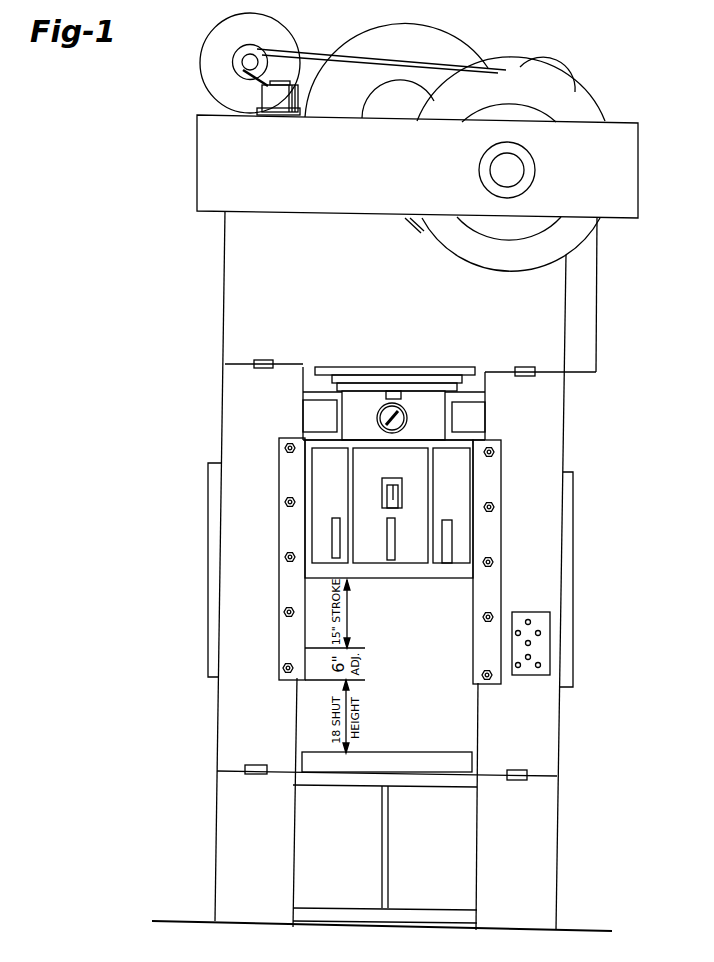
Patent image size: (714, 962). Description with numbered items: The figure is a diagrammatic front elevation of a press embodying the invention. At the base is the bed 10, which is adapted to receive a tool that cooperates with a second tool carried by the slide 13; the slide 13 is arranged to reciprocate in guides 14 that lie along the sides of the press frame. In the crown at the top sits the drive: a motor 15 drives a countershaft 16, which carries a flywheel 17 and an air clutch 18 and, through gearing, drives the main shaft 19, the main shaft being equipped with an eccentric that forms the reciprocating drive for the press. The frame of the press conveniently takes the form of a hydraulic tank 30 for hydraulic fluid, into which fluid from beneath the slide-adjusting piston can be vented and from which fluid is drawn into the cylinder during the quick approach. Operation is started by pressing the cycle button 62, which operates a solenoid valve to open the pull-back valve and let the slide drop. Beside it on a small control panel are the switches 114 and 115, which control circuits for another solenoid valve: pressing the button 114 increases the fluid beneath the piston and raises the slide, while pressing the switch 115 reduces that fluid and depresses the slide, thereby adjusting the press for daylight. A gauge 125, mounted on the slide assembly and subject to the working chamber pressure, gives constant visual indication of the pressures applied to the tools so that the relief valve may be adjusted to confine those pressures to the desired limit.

The bed 10 is at (382, 804).
The slide 13 is at (465, 535).
The guides 14 is at (548, 727).
The motor 15 is at (242, 62).
The countershaft 16 is at (524, 170).
The flywheel 17 is at (582, 115).
The air clutch 18 is at (527, 115).
The main shaft 19 is at (387, 117).
The hydraulic tank 30 is at (237, 260).
The cycle button 62 is at (547, 643).
The switch 114 is at (516, 633).
The switch 115 is at (540, 633).
The gauge 125 is at (405, 418).